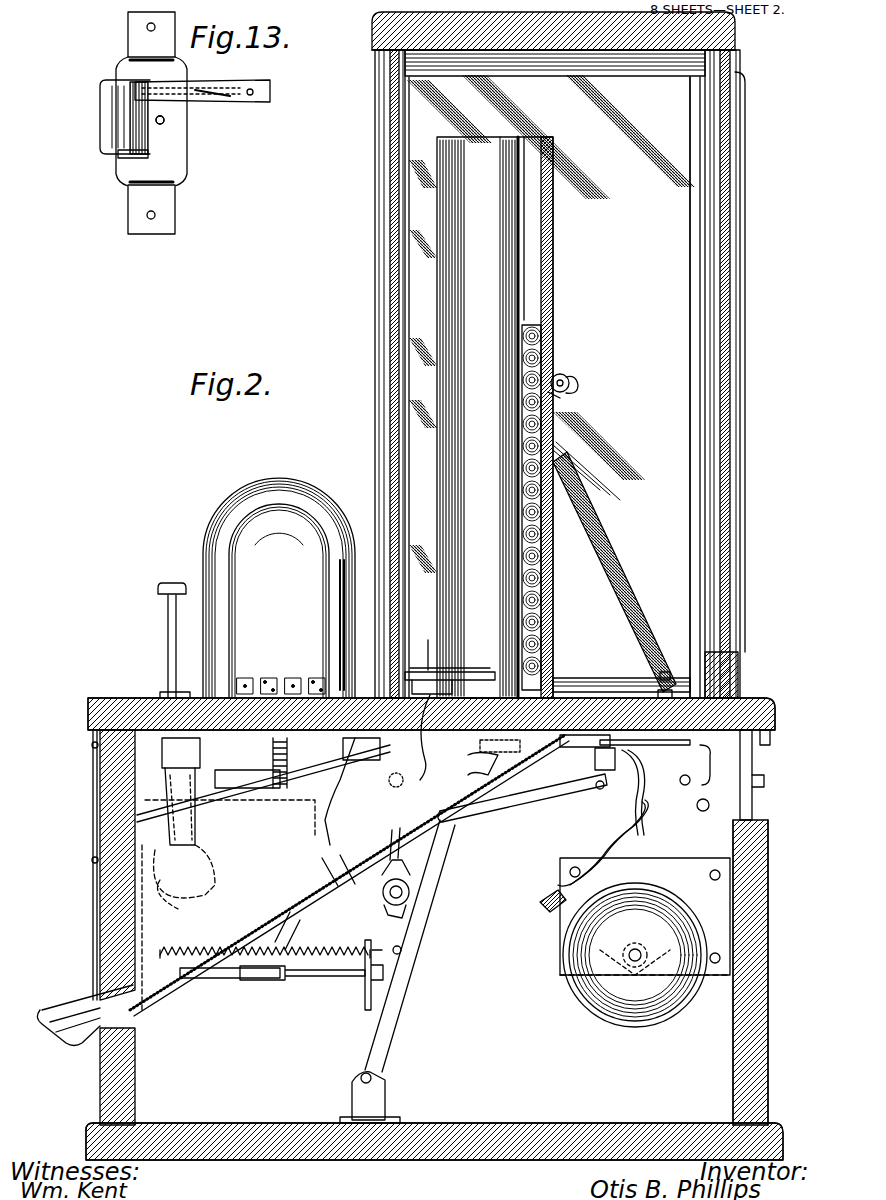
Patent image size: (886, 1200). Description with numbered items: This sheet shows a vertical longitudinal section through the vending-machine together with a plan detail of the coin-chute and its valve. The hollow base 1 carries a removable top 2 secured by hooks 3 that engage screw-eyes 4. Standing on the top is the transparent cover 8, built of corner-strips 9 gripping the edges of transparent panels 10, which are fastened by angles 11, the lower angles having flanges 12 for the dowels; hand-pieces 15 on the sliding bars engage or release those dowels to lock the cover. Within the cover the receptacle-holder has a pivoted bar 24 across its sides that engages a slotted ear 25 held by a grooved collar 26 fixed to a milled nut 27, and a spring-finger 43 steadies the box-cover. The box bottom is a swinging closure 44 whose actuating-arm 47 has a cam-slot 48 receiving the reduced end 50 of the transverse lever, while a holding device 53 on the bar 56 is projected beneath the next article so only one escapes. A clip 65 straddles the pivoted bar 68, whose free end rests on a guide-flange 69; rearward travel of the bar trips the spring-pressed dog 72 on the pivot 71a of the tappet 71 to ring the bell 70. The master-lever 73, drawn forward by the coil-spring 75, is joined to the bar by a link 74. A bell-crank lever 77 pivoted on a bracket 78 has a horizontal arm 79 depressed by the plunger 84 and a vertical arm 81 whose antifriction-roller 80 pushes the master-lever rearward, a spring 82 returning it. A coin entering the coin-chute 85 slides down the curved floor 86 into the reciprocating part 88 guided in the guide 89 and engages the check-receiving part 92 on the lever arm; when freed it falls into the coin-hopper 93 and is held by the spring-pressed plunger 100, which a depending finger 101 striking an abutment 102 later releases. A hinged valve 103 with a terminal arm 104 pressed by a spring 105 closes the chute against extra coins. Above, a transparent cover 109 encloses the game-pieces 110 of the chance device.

In FIG. 2, the base 1 is at (470, 1135).
In FIG. 2, the removable top 2 is at (110, 698).
In FIG. 2, the hooks 3 is at (698, 770).
In FIG. 2, the screw-eyes 4 is at (687, 777).
In FIG. 2, the transparent cover 8 is at (533, 417).
In FIG. 2, the corner-strips 9 is at (380, 60).
In FIG. 2, the transparent panels 10 is at (392, 258).
In FIG. 2, the angles 11 is at (420, 55).
In FIG. 2, the flanges 12 is at (740, 692).
In FIG. 2, the hand-pieces 15 is at (770, 746).
In FIG. 2, the pivoted bar 24 is at (557, 402).
In FIG. 2, the slotted ear 25 is at (562, 395).
In FIG. 2, the grooved collar 26 is at (560, 374).
In FIG. 2, the milled nut 27 is at (568, 380).
In FIG. 2, the spring-finger 43 is at (478, 672).
In FIG. 2, the swinging closure 44 is at (562, 640).
In FIG. 2, the actuating-arm 47 is at (570, 748).
In FIG. 2, the cam-slot 48 is at (349, 875).
In FIG. 2, the reduced end 50 is at (494, 758).
In FIG. 2, the holding device 53 is at (427, 640).
In FIG. 2, the bar 56 is at (414, 741).
In FIG. 2, the clip 65 is at (600, 772).
In FIG. 2, the pivoted bar 68 is at (600, 790).
In FIG. 2, the guide-flange 69 is at (685, 784).
In FIG. 2, the bell 70 is at (610, 992).
In FIG. 2, the tappet 71 is at (560, 892).
In FIG. 2, the pivot 71a is at (625, 812).
In FIG. 2, the spring-pressed dog 72 is at (645, 754).
In FIG. 2, the master-lever 73 is at (406, 1002).
In FIG. 2, the link 74 is at (505, 815).
In FIG. 2, the coil-spring 75 is at (330, 945).
In FIG. 2, the bell-crank lever 77 is at (330, 778).
In FIG. 2, the bracket 78 is at (380, 748).
In FIG. 2, the horizontal arm 79 is at (268, 772).
In FIG. 2, the antifriction-roller 80 is at (392, 908).
In FIG. 2, the vertical arm 81 is at (372, 862).
In FIG. 2, the spring 82 is at (272, 763).
In FIG. 13, the plunger 84 is at (165, 125).
In FIG. 2, the plunger 84 is at (168, 635).
In FIG. 2, the coin-chute 85 is at (140, 740).
In FIG. 13, the curved floor 86 is at (110, 135).
In FIG. 13, the reciprocating part 88 is at (160, 145).
In FIG. 2, the guide 89 is at (178, 790).
In FIG. 2, the check-receiving part 92 is at (230, 745).
In FIG. 2, the coin-hopper 93 is at (205, 875).
In FIG. 2, the spring-pressed plunger 100 is at (320, 977).
In FIG. 2, the depending finger 101 is at (295, 909).
In FIG. 2, the abutment 102 is at (368, 1000).
In FIG. 13, the hinged valve 103 is at (125, 160).
In FIG. 13, the terminal arm 104 is at (195, 98).
In FIG. 13, the spring 105 is at (232, 96).
In FIG. 2, the transparent cover 109 is at (279, 588).
In FIG. 2, the game-pieces 110 is at (316, 678).